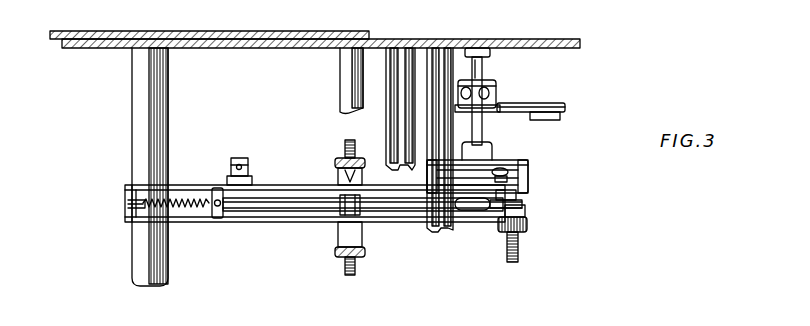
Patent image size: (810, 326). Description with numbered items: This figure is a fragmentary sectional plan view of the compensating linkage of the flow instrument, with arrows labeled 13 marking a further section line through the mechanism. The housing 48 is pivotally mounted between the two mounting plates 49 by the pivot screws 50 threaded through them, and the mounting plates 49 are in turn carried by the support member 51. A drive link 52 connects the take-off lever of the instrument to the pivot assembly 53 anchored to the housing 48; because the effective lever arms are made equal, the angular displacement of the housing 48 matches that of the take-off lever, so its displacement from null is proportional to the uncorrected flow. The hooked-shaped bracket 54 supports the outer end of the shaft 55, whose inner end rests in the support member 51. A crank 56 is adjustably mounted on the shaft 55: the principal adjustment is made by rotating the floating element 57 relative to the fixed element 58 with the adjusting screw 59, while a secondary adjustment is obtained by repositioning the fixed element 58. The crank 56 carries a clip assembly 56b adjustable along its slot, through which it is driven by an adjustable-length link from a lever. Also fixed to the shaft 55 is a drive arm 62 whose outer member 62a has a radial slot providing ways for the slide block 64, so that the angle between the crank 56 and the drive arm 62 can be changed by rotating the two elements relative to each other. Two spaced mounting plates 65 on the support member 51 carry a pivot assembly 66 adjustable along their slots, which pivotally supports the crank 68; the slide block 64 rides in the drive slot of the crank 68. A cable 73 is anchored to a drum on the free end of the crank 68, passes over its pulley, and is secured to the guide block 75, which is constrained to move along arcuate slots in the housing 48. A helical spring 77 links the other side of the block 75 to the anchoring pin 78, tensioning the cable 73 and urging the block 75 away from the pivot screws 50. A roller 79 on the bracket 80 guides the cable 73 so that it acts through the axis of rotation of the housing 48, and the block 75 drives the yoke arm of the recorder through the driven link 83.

The section line 13 is at (236, 79).
The housing 48 is at (197, 223).
The mounting plates 49 is at (337, 162).
The pivot screws 50 is at (345, 146).
The support member 51 is at (181, 38).
The drive link 52 is at (240, 160).
The pivot assembly 53 is at (252, 162).
The hooked-shaped bracket 54 is at (413, 170).
The shaft 55 is at (484, 72).
The crank 56 is at (552, 104).
The clip assembly 56b is at (560, 120).
The floating element 57 is at (490, 112).
The fixed element 58 is at (497, 95).
The adjusting screw 59 is at (478, 78).
The drive arm 62 is at (510, 160).
The outer member 62a is at (470, 200).
The slide block 64 is at (525, 203).
The mounting plates 65 is at (530, 176).
The pivot assembly 66 is at (530, 224).
The crank 68 is at (490, 210).
The cable 73 is at (289, 210).
The guide block 75 is at (220, 216).
The helical spring 77 is at (181, 197).
The anchoring pin 78 is at (127, 209).
The roller 79 is at (365, 212).
The bracket 80 is at (344, 212).
The driven link 83 is at (224, 200).